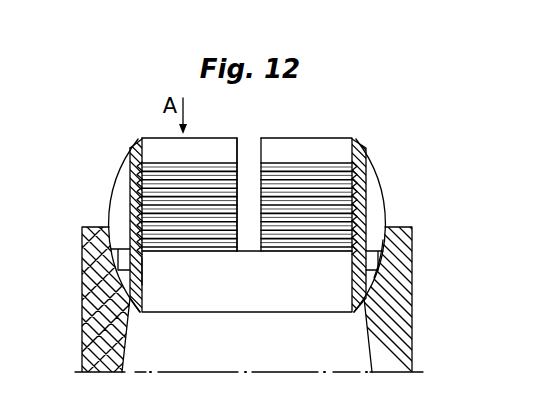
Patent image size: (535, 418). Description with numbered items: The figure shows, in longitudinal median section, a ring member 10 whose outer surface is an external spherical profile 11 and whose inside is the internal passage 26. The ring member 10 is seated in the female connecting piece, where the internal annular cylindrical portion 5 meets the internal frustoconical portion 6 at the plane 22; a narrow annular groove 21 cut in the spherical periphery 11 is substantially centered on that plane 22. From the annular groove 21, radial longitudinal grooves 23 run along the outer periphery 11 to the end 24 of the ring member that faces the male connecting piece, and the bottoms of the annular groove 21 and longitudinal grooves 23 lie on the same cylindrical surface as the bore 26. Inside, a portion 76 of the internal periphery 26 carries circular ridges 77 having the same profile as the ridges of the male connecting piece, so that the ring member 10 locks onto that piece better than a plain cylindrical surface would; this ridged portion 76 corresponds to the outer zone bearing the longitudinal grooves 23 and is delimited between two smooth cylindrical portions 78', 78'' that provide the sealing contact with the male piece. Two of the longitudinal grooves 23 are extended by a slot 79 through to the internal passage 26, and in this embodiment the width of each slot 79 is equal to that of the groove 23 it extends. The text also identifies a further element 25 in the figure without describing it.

The internal annular cylindrical portion 5 is at (85, 253).
The internal frustoconical portion 6 is at (131, 299).
The ring member 10 is at (368, 288).
The external spherical profile 11 is at (380, 190).
The annular groove 21 is at (387, 262).
The plane of connection 22 is at (128, 283).
The longitudinal groove 23 is at (372, 210).
The end of the ring member 24 is at (334, 138).
The nut wedge 25 is at (366, 180).
The internal passage 26 is at (150, 272).
The internal portion 76 is at (303, 175).
The circular ridges 77 is at (190, 177).
The cylindrical portion 78' is at (247, 328).
The cylindrical portion 78'' is at (172, 216).
The slot 79 is at (248, 162).